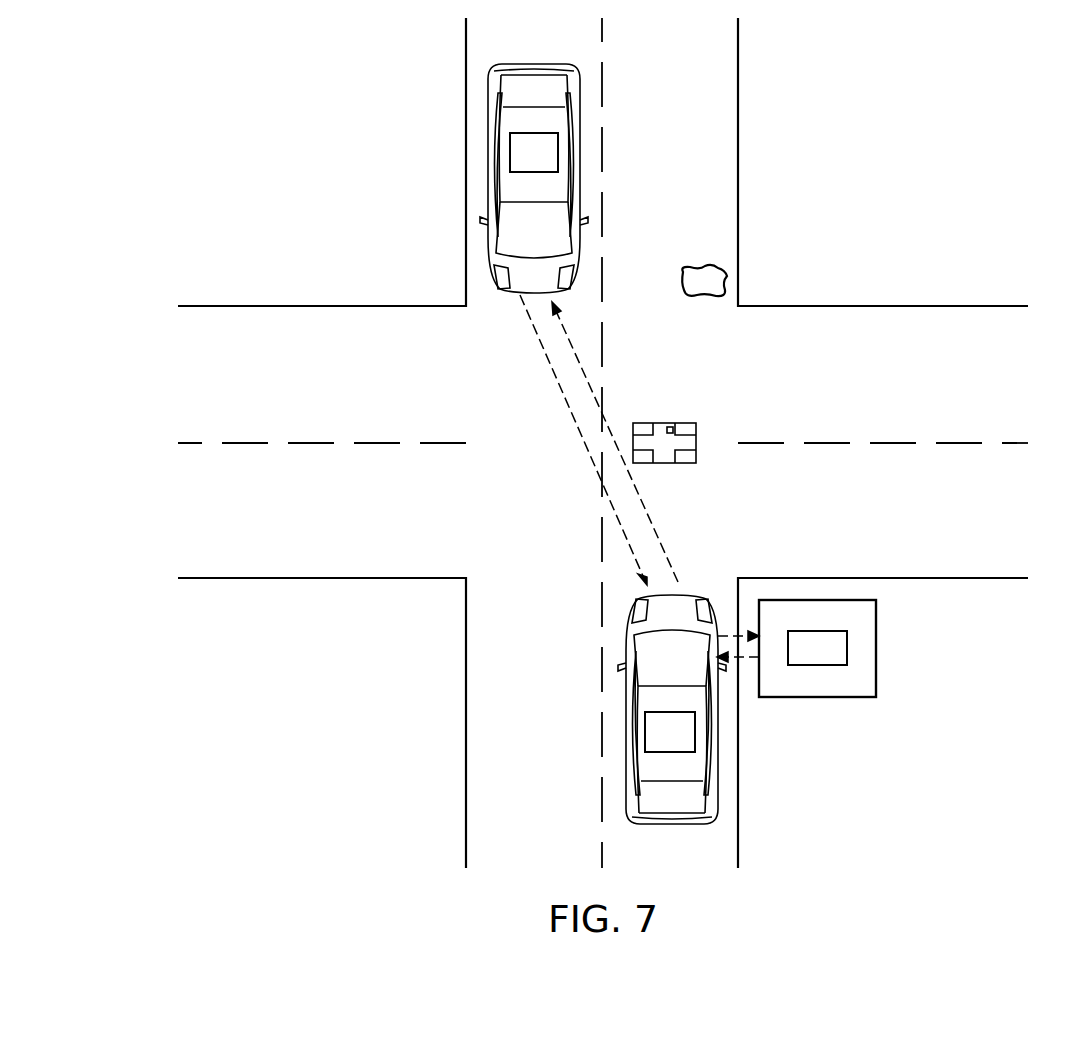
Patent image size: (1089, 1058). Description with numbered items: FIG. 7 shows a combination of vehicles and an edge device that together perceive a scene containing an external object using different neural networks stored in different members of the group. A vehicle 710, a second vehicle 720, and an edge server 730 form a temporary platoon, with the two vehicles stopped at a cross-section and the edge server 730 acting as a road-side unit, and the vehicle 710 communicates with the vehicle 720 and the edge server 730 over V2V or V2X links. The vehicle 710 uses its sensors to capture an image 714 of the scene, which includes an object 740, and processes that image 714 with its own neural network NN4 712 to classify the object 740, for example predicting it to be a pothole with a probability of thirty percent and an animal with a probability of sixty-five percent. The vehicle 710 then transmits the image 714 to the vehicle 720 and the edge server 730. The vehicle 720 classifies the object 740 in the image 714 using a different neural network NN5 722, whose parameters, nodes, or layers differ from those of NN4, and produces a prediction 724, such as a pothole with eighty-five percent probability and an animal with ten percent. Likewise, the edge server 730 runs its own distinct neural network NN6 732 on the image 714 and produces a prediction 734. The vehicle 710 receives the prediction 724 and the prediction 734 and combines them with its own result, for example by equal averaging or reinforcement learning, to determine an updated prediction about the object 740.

The vehicle 710 is at (627, 652).
The neural network NN4 712 is at (645, 735).
The image 714 is at (585, 380).
The vehicle 720 is at (488, 166).
The neural network NN5 722 is at (558, 150).
The prediction 724 is at (578, 428).
The edge server 730 is at (876, 646).
The neural network NN6 732 is at (847, 655).
The prediction 734 is at (745, 657).
The object 740 is at (727, 272).